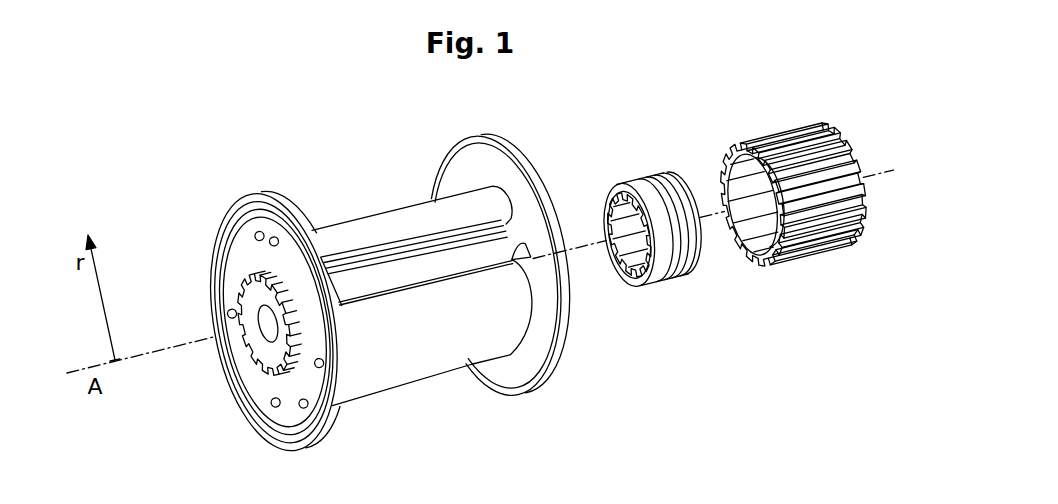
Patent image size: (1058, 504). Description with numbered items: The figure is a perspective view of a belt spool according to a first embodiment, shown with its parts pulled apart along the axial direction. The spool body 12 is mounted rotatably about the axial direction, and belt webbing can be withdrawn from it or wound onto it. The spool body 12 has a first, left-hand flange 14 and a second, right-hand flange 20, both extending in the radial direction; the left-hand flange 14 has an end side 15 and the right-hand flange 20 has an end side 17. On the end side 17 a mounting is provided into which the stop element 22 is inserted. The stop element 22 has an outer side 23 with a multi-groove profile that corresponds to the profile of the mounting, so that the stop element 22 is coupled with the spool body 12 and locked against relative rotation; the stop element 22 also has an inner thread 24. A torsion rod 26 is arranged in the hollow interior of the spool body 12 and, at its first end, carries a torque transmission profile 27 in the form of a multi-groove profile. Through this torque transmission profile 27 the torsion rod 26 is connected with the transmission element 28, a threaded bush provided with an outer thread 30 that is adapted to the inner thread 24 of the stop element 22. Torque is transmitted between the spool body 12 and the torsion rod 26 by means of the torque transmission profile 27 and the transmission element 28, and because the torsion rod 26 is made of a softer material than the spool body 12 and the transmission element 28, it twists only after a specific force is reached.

The spool body 12 is at (380, 230).
The left-hand flange 14 is at (214, 243).
The end side 15 is at (234, 297).
The end side 17 is at (567, 330).
The right-hand flange 20 is at (527, 375).
The stop element 22 is at (818, 240).
The outer side 23 is at (832, 143).
The inner thread 24 is at (728, 182).
The torsion rod 26 is at (265, 354).
The torque transmission profile 27 is at (548, 270).
The transmission element 28 is at (608, 210).
The outer thread 30 is at (672, 275).